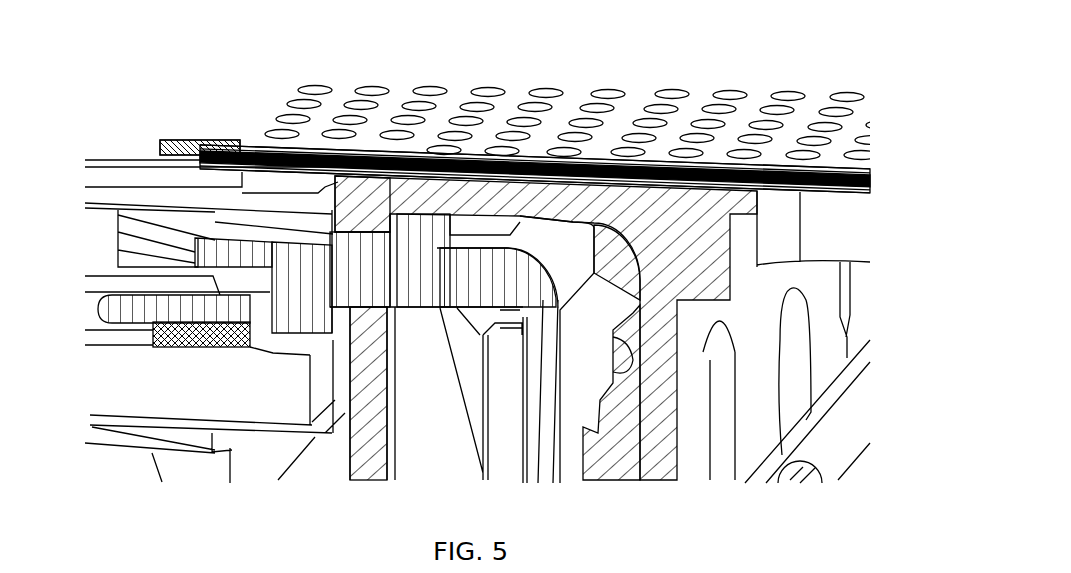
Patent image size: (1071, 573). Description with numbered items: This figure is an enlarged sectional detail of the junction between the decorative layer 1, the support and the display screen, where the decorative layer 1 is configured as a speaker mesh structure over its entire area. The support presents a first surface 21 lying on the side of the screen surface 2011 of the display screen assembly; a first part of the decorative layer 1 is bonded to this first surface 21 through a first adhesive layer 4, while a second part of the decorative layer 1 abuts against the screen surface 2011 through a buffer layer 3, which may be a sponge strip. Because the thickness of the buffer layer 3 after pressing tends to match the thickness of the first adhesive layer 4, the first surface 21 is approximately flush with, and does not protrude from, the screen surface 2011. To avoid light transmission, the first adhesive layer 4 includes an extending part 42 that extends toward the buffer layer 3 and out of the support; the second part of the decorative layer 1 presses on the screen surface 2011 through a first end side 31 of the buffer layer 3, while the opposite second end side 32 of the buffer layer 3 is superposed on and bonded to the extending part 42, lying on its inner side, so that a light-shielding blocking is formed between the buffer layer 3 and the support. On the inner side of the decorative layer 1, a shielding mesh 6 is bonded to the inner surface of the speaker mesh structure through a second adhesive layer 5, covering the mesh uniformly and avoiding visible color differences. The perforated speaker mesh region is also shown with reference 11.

The decorative layer 1 is at (165, 140).
The buffer layer 3 is at (179, 140).
The first end side 31 is at (253, 200).
The second end side 32 is at (336, 170).
The extending part 42 is at (398, 193).
The perforated housing plate 11 is at (490, 100).
The shielding mesh 6 is at (573, 163).
The second adhesive layer 5 is at (535, 169).
The first adhesive layer 4 is at (647, 157).
The first surface 21 is at (527, 227).
The screen surface 2011 is at (120, 167).